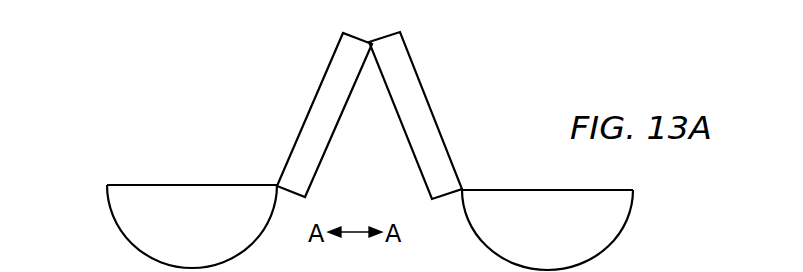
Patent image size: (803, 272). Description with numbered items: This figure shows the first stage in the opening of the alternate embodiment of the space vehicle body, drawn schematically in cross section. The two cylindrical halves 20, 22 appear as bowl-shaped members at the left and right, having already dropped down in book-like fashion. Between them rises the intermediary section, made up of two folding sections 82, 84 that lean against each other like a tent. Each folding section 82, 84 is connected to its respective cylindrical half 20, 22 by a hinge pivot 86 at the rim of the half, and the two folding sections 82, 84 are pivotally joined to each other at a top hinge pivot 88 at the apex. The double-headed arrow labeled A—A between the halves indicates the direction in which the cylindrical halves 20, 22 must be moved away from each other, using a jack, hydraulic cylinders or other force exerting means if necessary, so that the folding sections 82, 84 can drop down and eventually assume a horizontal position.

The cylindrical half 20 is at (604, 240).
The cylindrical half 22 is at (137, 240).
The folding section 82 is at (422, 115).
The folding section 84 is at (313, 108).
The hinge pivot 86 is at (278, 186).
The top hinge pivot 88 is at (371, 43).